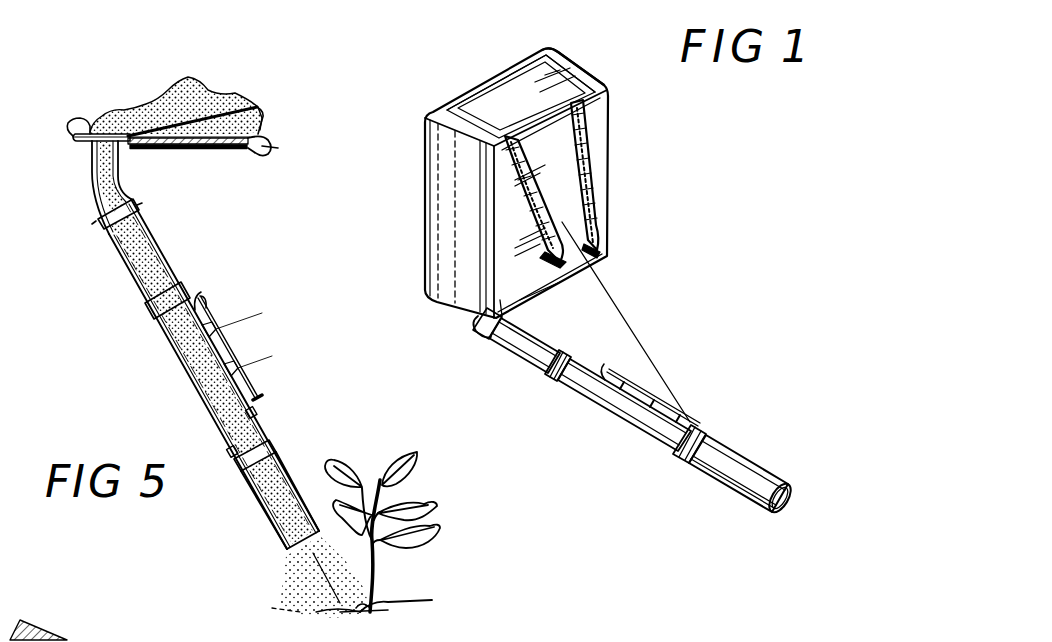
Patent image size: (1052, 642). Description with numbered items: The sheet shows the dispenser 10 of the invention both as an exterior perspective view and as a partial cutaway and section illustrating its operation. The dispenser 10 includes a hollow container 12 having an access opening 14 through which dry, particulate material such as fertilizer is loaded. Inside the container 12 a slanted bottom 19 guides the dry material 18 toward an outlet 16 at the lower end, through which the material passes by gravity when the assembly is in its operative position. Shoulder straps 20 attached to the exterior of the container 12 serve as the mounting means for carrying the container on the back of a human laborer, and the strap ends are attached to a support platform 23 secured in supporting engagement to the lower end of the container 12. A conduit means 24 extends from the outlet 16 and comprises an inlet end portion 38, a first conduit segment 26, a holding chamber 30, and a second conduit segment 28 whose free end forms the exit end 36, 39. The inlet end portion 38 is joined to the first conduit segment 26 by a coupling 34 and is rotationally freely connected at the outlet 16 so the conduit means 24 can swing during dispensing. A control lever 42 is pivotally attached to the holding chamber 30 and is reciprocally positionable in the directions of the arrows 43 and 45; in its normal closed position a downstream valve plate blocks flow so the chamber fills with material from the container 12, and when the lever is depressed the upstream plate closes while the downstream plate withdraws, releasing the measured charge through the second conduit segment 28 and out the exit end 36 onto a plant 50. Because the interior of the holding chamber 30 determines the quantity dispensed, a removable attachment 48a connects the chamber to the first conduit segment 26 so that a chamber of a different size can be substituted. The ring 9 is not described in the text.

In FIG. 1, the dispenser 10 is at (640, 204).
In FIG. 1, the container 12 is at (424, 200).
In FIG. 5, the container 12 is at (262, 140).
In FIG. 1, the access opening 14 is at (578, 72).
In FIG. 5, the outlet 16 is at (78, 122).
In FIG. 5, the dry material 18 is at (233, 93).
In FIG. 5, the slanted bottom 19 is at (214, 146).
In FIG. 1, the shoulder straps 20 is at (552, 188).
In FIG. 5, the support platform 23 is at (174, 151).
In FIG. 1, the conduit means 24 is at (694, 350).
In FIG. 5, the conduit means 24 is at (132, 320).
In FIG. 1, the first conduit segment 26 is at (515, 358).
In FIG. 5, the first conduit segment 26 is at (158, 246).
In FIG. 1, the second conduit segment 28 is at (738, 497).
In FIG. 5, the second conduit segment 28 is at (292, 472).
In FIG. 1, the holding chamber 30 is at (615, 418).
In FIG. 5, the coupling 34 is at (90, 214).
In FIG. 5, the exit end 36 is at (290, 553).
In FIG. 1, the inlet end portion 38 is at (478, 327).
In FIG. 5, the inlet end portion 38 is at (86, 178).
In FIG. 1, the exit end 39 is at (791, 500).
In FIG. 1, the control lever 42 is at (598, 368).
In FIG. 5, the control lever 42 is at (234, 350).
In FIG. 5, the directional arrow 43 is at (272, 378).
In FIG. 5, the directional arrow 45 is at (214, 302).
In FIG. 1, the removable attachment 48a is at (688, 466).
In FIG. 5, the plant 50 is at (454, 506).
In FIG. 1, the tube coupling ring 9 is at (545, 380).